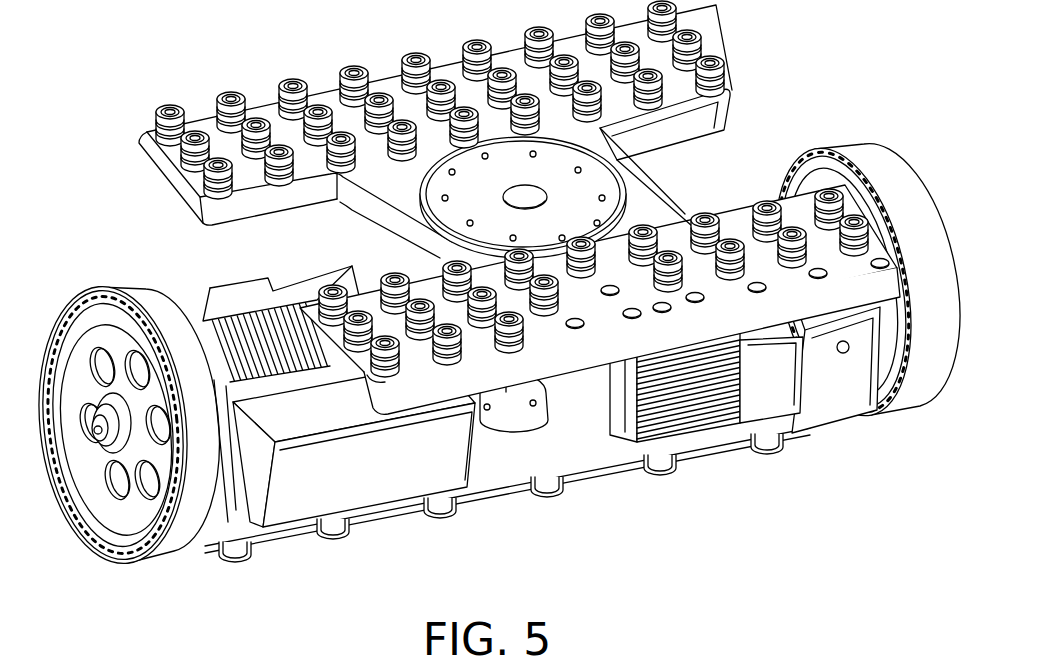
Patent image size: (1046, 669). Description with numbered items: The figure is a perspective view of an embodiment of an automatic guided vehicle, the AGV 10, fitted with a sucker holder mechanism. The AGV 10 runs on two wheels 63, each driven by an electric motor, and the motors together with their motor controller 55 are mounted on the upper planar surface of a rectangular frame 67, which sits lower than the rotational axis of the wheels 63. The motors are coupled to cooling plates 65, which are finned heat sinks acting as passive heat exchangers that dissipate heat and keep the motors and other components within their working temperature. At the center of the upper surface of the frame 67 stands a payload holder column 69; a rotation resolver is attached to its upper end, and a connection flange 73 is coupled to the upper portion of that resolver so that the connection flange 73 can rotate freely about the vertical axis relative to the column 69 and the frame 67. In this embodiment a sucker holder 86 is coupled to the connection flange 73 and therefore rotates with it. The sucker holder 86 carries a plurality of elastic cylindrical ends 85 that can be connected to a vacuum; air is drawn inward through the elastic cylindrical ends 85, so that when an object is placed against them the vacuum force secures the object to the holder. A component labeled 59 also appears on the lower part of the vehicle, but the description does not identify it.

The automatic guided vehicle (AGV) 10 is at (493, 302).
The motor controller 55 is at (753, 410).
The battery 59 is at (317, 497).
The wheel 63 is at (865, 150).
The cooling plate 65 is at (192, 316).
The rectangular frame 67 is at (520, 473).
The payload holder column 69 is at (510, 402).
The connection flange 73 is at (600, 183).
The elastic cylindrical end 85 is at (157, 105).
The sucker holder 86 is at (388, 80).